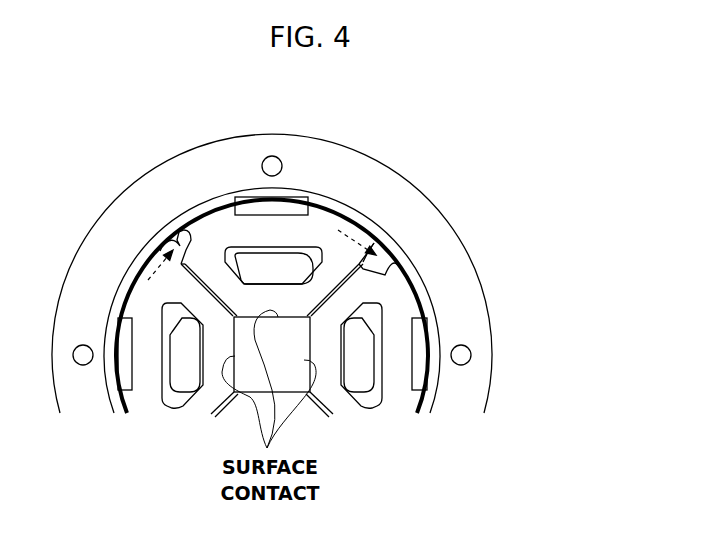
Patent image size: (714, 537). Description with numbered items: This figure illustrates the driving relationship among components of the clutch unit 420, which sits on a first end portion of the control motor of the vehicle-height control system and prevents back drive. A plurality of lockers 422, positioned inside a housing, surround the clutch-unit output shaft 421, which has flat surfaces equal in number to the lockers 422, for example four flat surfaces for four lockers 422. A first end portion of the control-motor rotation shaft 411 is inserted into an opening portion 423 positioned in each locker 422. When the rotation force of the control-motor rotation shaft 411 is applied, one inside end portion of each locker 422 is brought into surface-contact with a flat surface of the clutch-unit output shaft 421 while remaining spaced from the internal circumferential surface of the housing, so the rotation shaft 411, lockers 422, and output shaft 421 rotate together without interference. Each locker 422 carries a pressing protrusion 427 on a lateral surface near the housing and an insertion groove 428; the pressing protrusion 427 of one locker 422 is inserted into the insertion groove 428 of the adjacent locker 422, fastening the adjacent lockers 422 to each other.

The clutch unit 420 is at (440, 173).
The clutch-unit output shaft 421 is at (298, 350).
The locker 422 is at (293, 208).
The opening portion 423 is at (228, 250).
The control-motor rotation shaft 411 is at (257, 262).
The pressing protrusion 427 is at (383, 252).
The insertion groove 428 is at (410, 287).